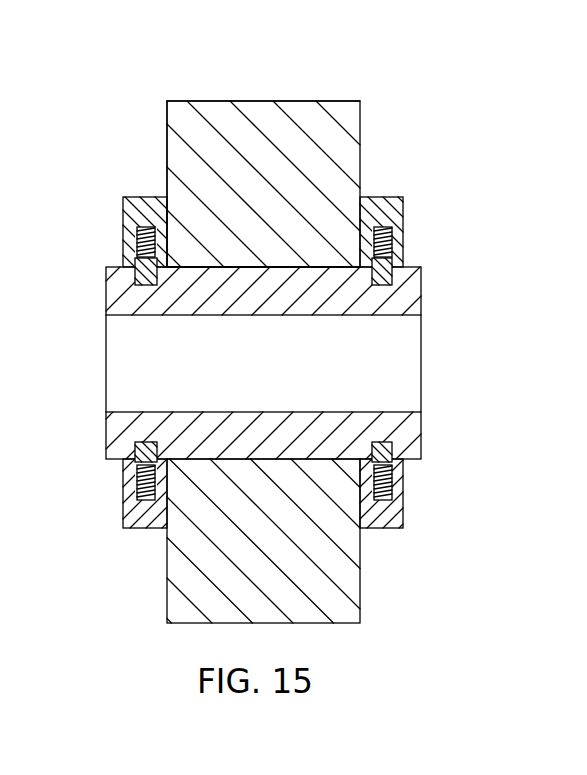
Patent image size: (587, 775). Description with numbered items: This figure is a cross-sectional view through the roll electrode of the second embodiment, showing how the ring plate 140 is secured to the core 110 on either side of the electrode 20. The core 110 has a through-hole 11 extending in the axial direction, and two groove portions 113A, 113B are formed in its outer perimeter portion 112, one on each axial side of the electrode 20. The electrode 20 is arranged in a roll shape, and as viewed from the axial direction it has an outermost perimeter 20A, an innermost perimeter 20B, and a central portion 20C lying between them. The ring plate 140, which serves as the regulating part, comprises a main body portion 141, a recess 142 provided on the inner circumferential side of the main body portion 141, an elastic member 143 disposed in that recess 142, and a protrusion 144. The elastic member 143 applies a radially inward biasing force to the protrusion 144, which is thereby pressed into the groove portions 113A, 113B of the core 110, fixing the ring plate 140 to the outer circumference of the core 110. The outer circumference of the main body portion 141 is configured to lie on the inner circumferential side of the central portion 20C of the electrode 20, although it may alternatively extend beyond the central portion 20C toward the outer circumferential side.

The through-hole 11 is at (412, 410).
The core 110 is at (412, 305).
The outer perimeter portion 112 is at (204, 267).
The groove portion 113A is at (135, 278).
The groove portion 113B is at (394, 275).
The electrode 20 is at (328, 137).
The outermost perimeter 20A is at (262, 101).
The innermost perimeter 20B is at (322, 265).
The central portion 20C is at (204, 185).
The ring plate 140 is at (405, 208).
The main body portion 141 is at (380, 530).
The recess 142 is at (398, 490).
The elastic member 143 is at (138, 485).
The protrusion 144 is at (394, 452).